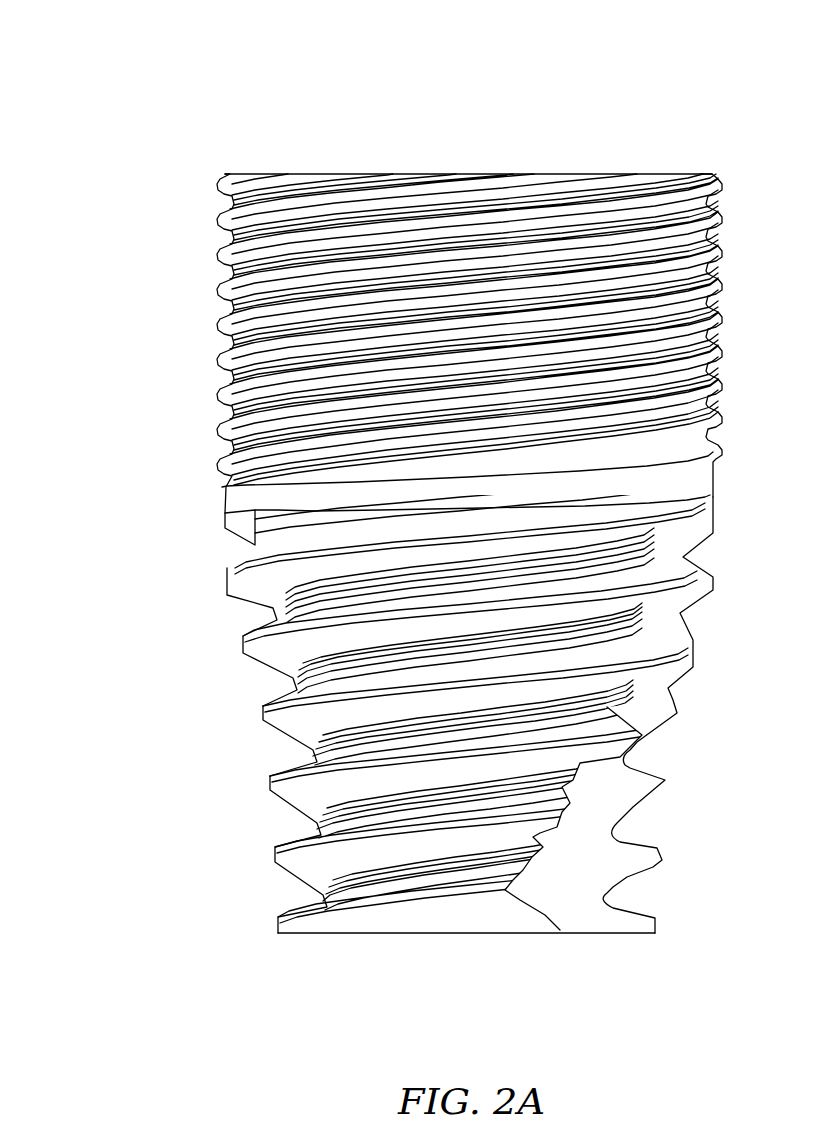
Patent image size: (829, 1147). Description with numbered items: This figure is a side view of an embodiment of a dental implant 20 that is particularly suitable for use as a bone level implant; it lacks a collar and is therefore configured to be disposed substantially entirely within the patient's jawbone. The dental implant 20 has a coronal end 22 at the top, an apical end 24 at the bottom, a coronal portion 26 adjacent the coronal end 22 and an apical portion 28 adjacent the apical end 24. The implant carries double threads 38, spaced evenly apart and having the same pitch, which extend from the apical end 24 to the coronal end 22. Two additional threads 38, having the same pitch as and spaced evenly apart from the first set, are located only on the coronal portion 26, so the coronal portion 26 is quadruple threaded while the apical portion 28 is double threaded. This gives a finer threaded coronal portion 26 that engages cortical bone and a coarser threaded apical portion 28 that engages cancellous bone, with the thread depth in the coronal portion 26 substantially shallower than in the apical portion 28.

The dental implant 20 is at (152, 66).
The coronal end 22 is at (647, 176).
The apical end 24 is at (587, 937).
The coronal portion 26 is at (150, 325).
The apical portion 28 is at (182, 805).
The threads 38 is at (267, 714).